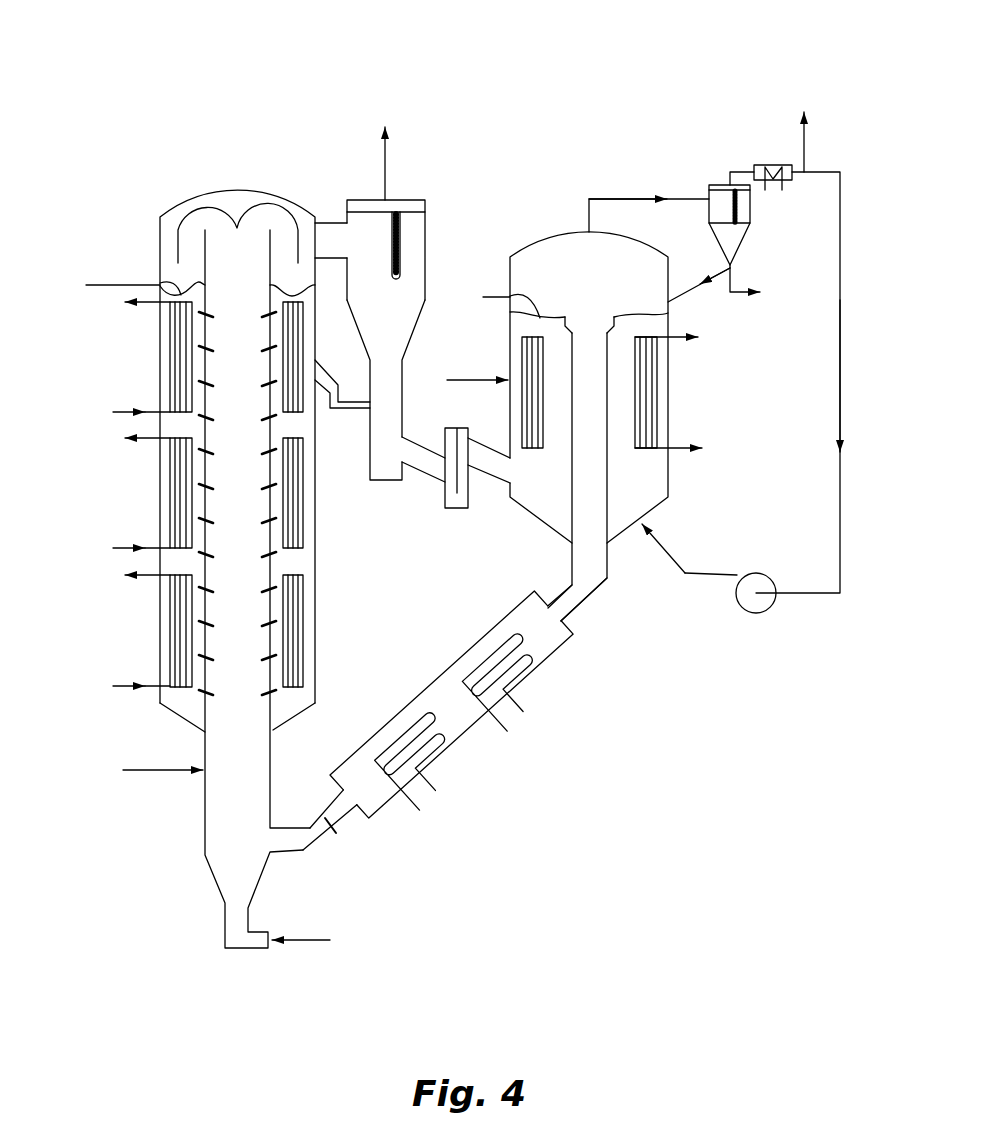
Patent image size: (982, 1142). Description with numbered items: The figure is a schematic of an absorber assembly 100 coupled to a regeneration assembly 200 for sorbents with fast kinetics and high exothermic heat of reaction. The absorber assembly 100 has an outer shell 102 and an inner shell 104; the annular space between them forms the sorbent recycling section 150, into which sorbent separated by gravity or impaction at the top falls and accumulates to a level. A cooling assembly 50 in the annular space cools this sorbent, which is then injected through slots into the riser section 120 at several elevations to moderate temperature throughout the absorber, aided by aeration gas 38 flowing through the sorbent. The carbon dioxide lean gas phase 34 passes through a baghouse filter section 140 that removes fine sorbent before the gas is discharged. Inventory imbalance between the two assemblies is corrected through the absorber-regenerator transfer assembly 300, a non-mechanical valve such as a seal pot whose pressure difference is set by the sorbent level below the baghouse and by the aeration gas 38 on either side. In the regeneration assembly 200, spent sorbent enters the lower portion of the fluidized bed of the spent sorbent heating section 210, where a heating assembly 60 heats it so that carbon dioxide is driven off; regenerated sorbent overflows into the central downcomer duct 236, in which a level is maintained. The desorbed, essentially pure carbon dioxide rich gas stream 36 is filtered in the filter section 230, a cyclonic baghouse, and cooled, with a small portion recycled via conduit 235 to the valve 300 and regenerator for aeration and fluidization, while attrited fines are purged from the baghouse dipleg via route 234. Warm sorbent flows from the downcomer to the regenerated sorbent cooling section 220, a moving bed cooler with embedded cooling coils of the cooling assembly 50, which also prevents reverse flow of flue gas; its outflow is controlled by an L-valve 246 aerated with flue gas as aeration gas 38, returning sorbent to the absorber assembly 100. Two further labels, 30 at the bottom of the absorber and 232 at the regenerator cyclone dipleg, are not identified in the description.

The absorber assembly 100 is at (241, 120).
The outer shell 102 is at (160, 261).
The inner shell 104 is at (205, 283).
The sorbent recycling section 150 is at (175, 188).
The cooling assembly 50 is at (428, 808).
The filter section 140 is at (440, 243).
The carbon dioxide lean gas phase 34 is at (386, 152).
The absorber-regenerator transfer assembly 300 is at (455, 520).
The aeration gas 38 is at (175, 712).
The riser section 120 is at (144, 772).
The solids outlet 30 is at (315, 942).
The regeneration assembly 200 is at (627, 598).
The spent sorbent heating section 210 is at (458, 383).
The heating assembly 60 is at (613, 392).
The central downcomer duct 236 is at (588, 476).
The conduit 235 is at (840, 366).
The filter section 230 is at (710, 174).
The fines purge route 234 is at (763, 285).
The solids return leg 232 is at (679, 299).
The carbon dioxide rich gas stream 36 is at (804, 130).
The regenerated sorbent cooling section 220 is at (505, 757).
The L-valve 246 is at (330, 823).